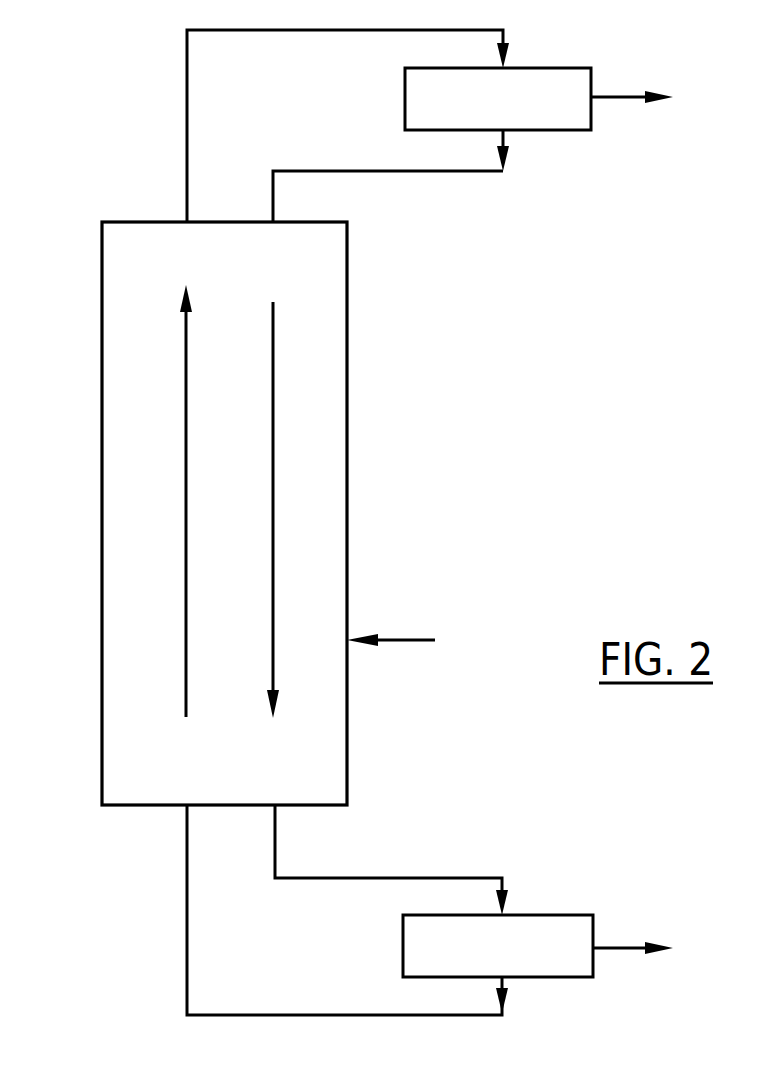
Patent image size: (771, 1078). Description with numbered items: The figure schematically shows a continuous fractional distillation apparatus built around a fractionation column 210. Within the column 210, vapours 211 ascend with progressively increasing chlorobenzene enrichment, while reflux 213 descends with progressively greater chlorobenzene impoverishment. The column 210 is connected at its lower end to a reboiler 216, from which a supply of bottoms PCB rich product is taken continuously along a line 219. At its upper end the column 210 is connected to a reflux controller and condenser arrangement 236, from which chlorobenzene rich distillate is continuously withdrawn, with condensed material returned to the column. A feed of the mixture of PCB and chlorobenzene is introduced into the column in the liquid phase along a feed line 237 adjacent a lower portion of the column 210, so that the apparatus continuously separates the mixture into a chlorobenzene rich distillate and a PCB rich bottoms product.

The fractionation column 210 is at (347, 460).
The vapours 211 is at (186, 488).
The reflux 213 is at (273, 593).
The reboiler 216 is at (590, 917).
The line 219 is at (628, 945).
The reflux controller and condenser arrangement 236 is at (570, 78).
The feed line 237 is at (425, 640).